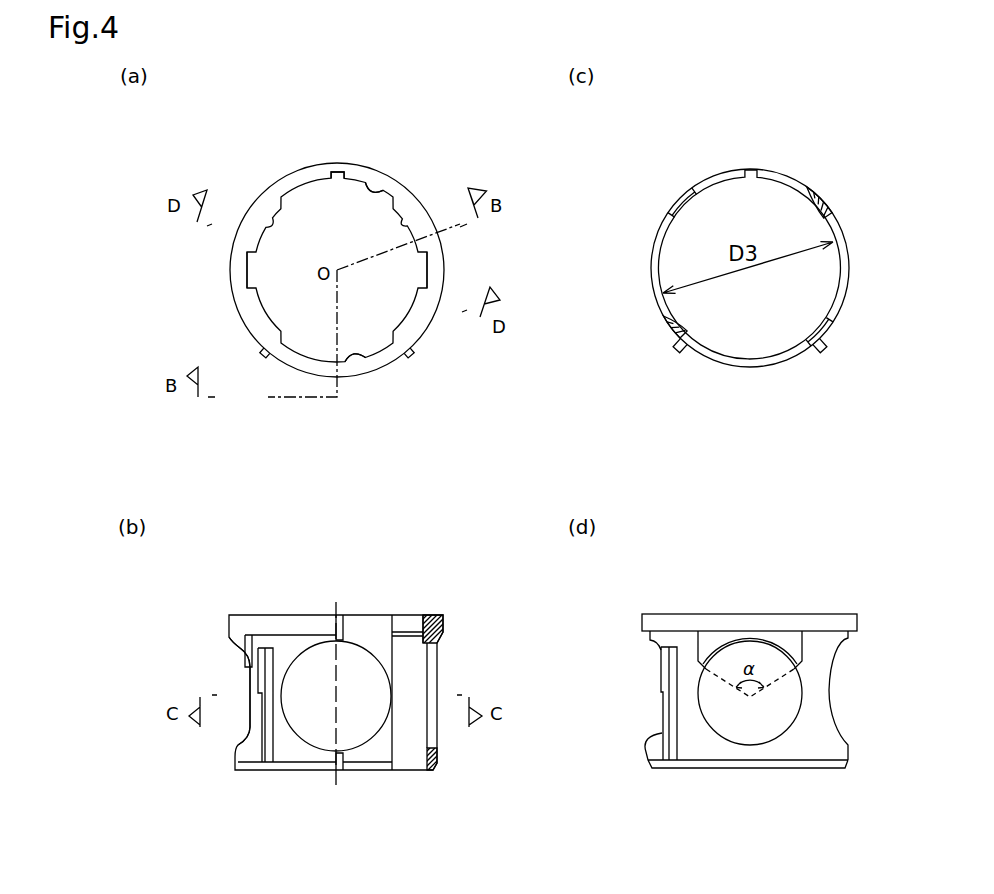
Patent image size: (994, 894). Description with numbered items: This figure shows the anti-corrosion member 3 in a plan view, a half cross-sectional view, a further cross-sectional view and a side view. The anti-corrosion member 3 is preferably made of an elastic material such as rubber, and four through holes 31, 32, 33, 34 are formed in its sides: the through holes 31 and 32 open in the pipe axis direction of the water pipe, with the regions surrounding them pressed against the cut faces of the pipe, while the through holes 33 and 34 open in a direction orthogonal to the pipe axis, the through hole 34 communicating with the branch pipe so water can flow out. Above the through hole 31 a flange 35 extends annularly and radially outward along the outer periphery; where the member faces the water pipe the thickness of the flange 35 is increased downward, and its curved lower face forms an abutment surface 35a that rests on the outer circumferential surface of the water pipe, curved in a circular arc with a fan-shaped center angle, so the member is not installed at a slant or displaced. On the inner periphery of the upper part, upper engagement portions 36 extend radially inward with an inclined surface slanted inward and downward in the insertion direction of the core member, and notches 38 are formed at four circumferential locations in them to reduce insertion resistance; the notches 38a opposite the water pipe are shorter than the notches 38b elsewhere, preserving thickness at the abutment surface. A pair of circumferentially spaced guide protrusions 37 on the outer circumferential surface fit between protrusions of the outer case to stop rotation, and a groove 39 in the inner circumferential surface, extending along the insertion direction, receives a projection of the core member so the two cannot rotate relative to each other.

The anti-corrosion member 3 is at (245, 295).
The through hole 31 is at (250, 733).
The through hole 32 is at (437, 733).
The through hole 33 is at (358, 736).
The through hole 34 is at (312, 738).
The flange 35 is at (290, 617).
The abutment surface 35a is at (236, 648).
The upper engagement portion 36 is at (407, 312).
The guide protrusion 37 is at (258, 356).
The notch 38 is at (378, 617).
The notch 38a is at (247, 264).
The notch 38b is at (375, 190).
The groove 39 is at (337, 163).